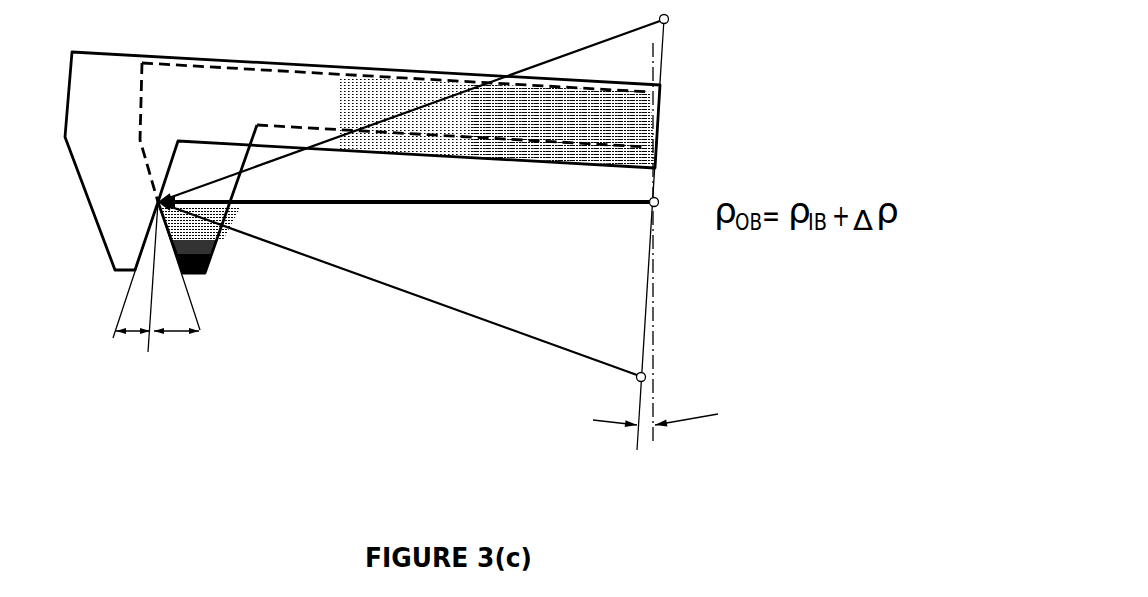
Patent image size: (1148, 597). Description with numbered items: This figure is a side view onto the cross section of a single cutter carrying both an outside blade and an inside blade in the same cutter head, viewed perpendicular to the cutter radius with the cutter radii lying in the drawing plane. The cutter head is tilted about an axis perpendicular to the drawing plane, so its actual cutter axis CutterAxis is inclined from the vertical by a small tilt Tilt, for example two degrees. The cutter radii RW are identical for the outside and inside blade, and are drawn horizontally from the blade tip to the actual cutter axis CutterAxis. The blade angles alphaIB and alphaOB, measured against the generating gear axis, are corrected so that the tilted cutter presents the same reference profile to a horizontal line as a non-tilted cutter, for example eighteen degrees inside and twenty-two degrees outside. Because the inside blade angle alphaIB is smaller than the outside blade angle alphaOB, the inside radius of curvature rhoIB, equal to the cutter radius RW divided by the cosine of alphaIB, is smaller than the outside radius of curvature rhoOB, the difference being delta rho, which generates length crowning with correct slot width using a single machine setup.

The actual cutter axis CutterAxis is at (662, 66).
The outside blade radius of curvature rhoOB is at (409, 111).
The inside blade radius of curvature rhoIB is at (397, 288).
The cutter radius RW is at (403, 228).
The inside blade angle alphaIB is at (132, 333).
The outside blade angle alphaOB is at (178, 333).
The tilt Tilt is at (643, 443).